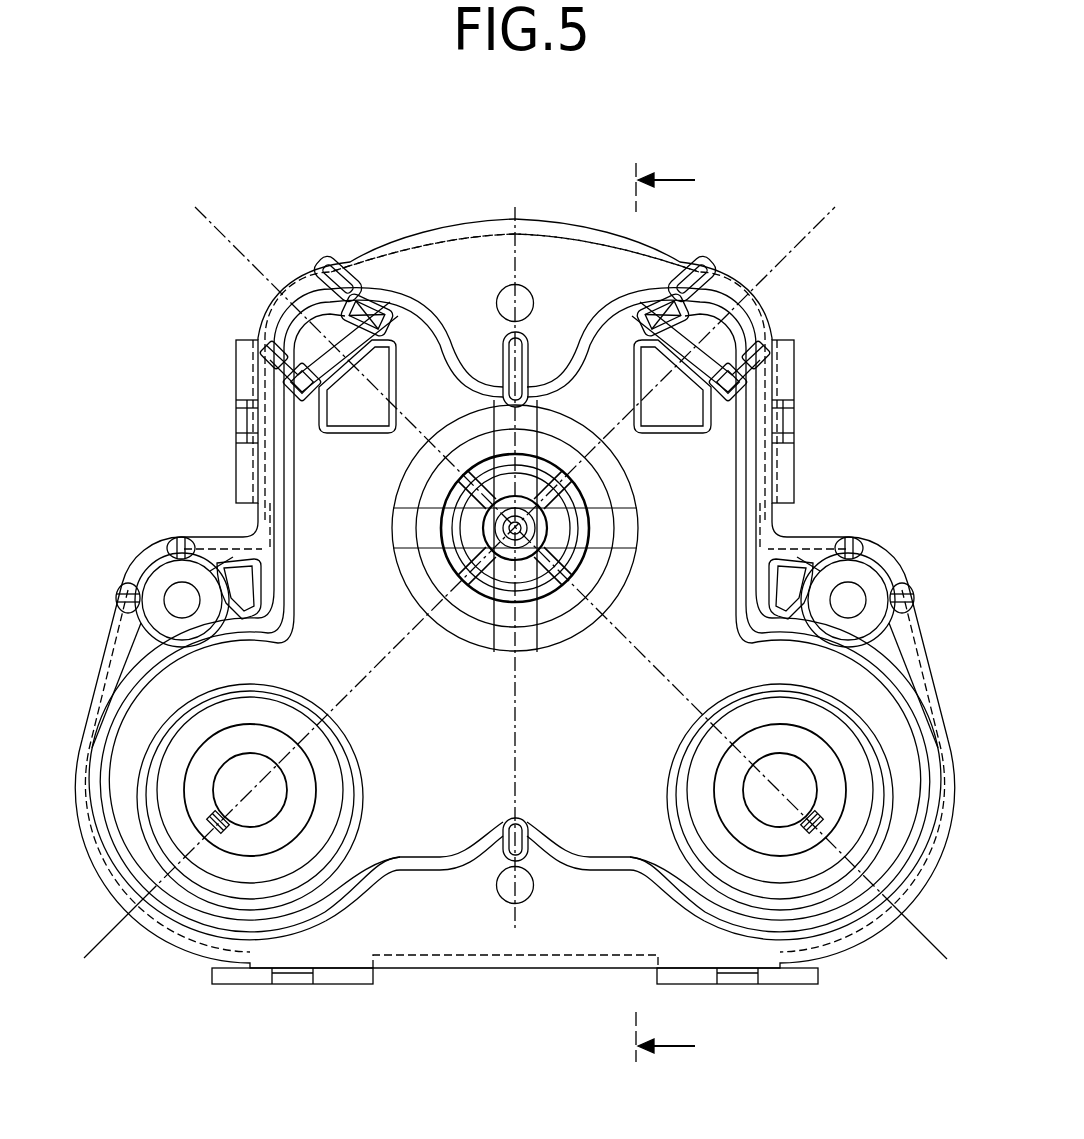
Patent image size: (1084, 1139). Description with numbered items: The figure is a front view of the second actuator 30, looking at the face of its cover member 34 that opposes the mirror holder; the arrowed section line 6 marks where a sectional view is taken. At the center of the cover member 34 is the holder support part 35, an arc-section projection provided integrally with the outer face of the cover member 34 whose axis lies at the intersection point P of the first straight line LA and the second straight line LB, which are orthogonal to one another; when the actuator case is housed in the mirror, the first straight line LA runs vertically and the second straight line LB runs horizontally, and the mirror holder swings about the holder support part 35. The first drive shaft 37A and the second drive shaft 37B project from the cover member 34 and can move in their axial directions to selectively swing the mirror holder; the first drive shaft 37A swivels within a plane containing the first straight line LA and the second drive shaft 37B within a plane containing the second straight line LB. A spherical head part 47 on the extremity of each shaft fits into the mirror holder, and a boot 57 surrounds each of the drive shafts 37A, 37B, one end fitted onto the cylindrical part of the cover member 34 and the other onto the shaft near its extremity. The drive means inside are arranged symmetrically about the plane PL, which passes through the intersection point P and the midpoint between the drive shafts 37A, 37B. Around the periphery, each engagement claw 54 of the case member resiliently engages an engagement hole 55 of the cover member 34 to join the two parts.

The second actuator 30 is at (428, 978).
The cover member 34 is at (588, 915).
The holder support part 35 is at (550, 597).
The first drive shaft 37A is at (300, 799).
The second drive shaft 37B is at (735, 797).
The spherical head part 47 is at (232, 782).
The engagement claw 54 is at (240, 405).
The engagement hole 55 is at (240, 436).
The boot 57 is at (262, 730).
The intersection point P is at (520, 532).
The plane PL is at (515, 260).
The first straight line LA is at (383, 662).
The second straight line LB is at (625, 628).
The section line 6- 6 is at (668, 614).